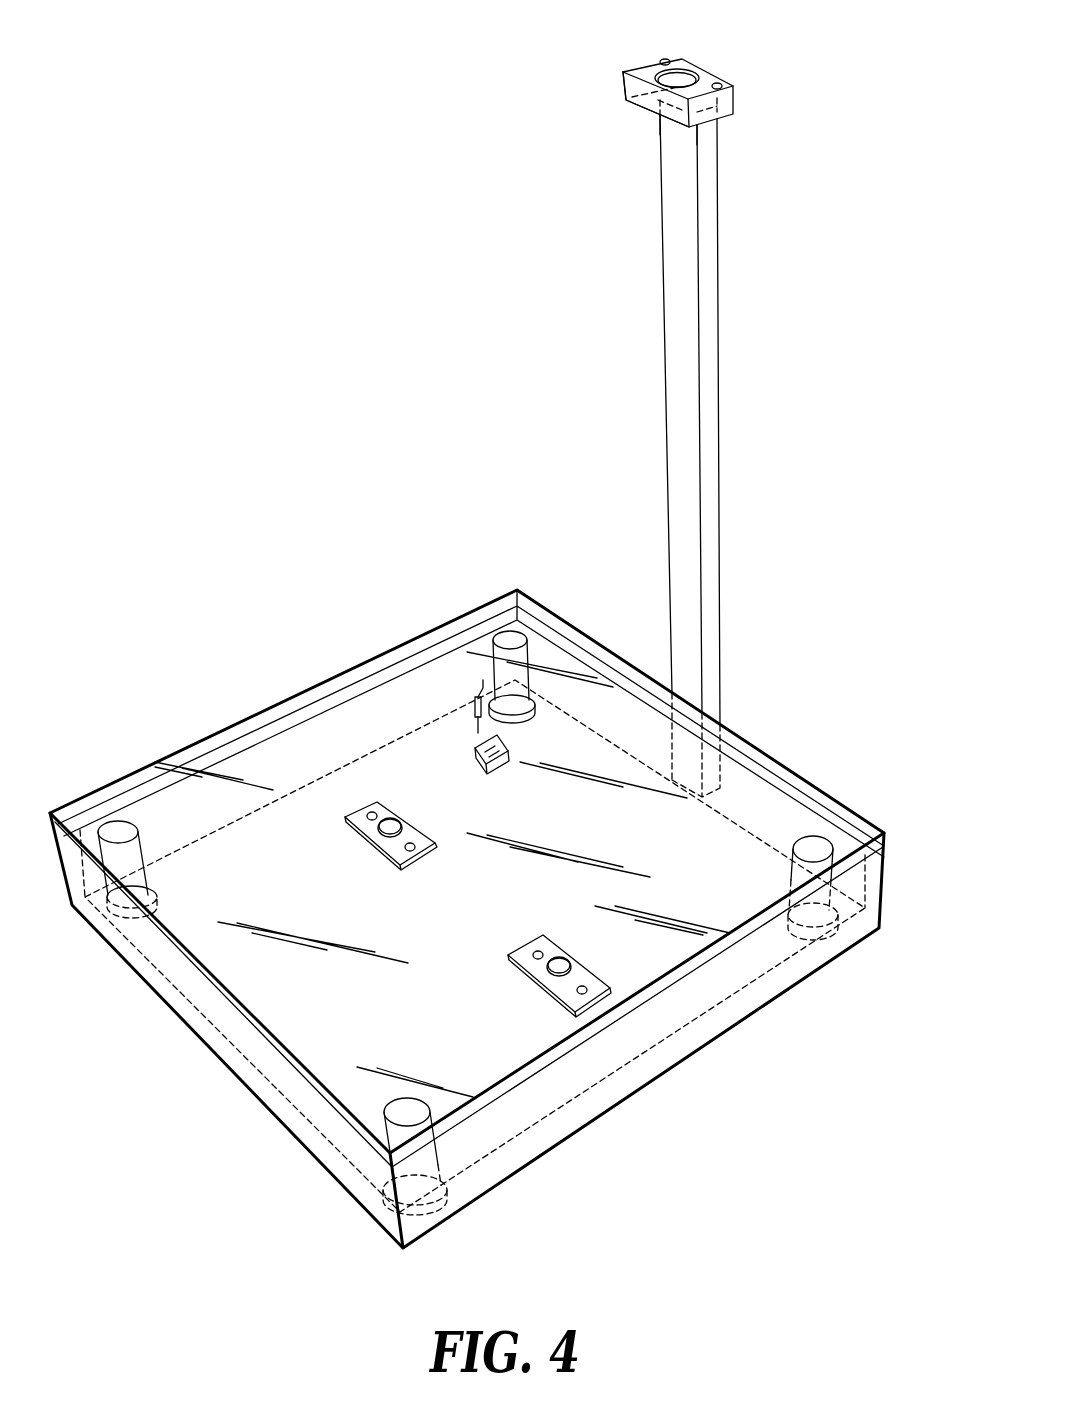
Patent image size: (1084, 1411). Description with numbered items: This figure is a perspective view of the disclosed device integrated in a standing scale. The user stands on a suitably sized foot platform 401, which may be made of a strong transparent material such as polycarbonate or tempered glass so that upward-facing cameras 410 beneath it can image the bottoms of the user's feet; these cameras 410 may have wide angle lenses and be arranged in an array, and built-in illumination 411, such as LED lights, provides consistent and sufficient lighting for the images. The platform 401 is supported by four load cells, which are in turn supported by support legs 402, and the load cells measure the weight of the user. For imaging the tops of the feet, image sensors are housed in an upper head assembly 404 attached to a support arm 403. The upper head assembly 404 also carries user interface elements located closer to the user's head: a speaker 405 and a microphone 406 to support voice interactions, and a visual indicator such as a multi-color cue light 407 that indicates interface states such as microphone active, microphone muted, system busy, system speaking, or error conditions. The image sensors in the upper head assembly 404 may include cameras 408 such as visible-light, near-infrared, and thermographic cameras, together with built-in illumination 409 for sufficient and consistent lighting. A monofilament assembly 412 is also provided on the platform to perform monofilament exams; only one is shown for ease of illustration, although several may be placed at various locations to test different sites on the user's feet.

The foot platform 401 is at (813, 783).
The support legs 402 is at (862, 898).
The support arm 403 is at (724, 345).
The upper head assembly 404 is at (737, 118).
The speaker 405 is at (702, 68).
The microphone 406 is at (725, 85).
The multi-color cue light 407 is at (662, 61).
The cameras 408 is at (661, 117).
The built-in illumination 409 is at (636, 111).
The upward-facing cameras 410 is at (390, 805).
The built-in illumination 411 is at (372, 811).
The monofilament assembly 412 is at (493, 732).